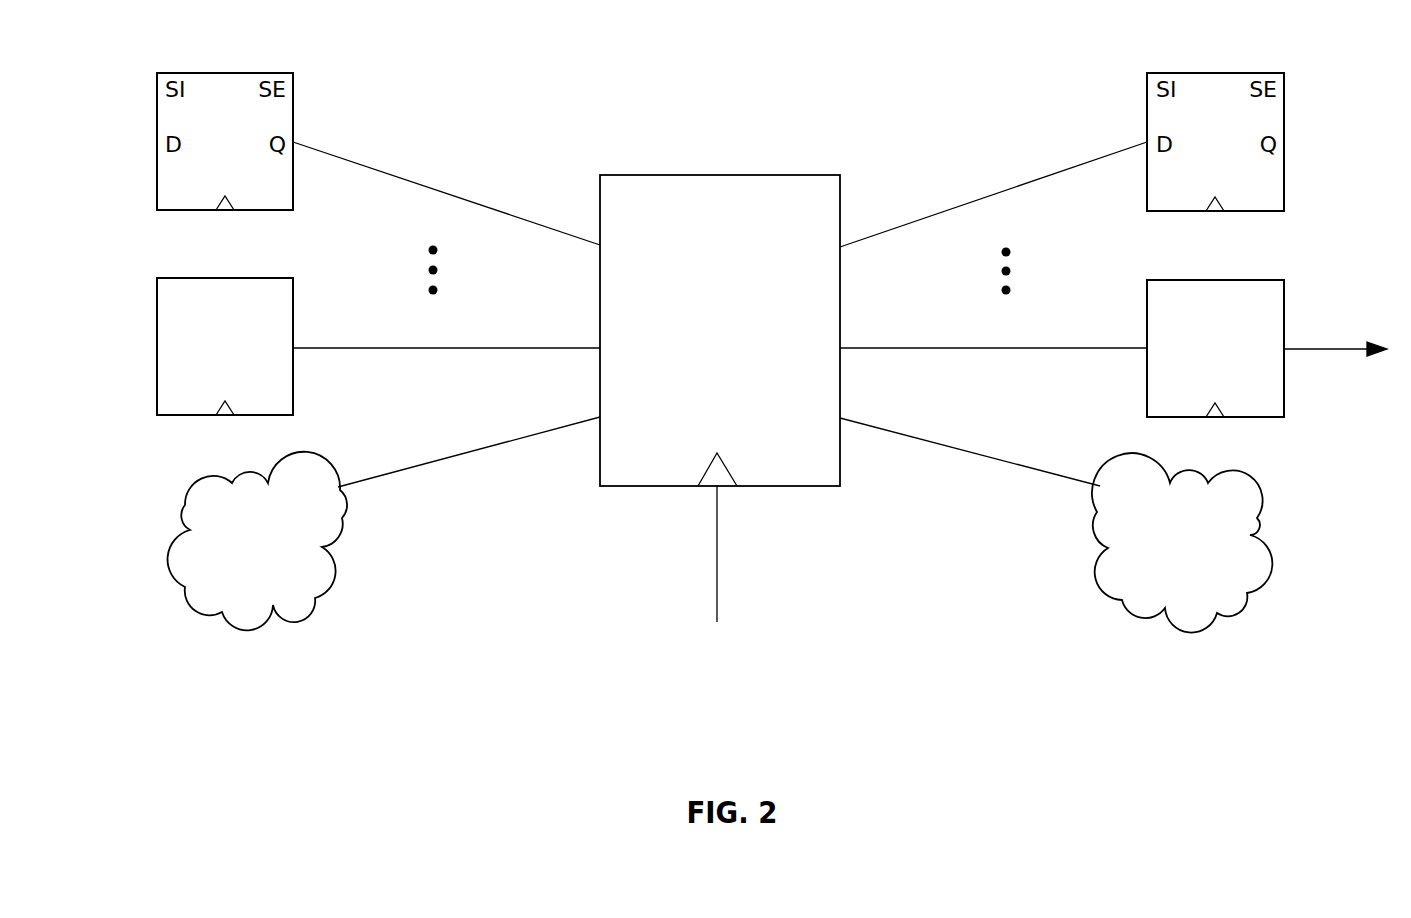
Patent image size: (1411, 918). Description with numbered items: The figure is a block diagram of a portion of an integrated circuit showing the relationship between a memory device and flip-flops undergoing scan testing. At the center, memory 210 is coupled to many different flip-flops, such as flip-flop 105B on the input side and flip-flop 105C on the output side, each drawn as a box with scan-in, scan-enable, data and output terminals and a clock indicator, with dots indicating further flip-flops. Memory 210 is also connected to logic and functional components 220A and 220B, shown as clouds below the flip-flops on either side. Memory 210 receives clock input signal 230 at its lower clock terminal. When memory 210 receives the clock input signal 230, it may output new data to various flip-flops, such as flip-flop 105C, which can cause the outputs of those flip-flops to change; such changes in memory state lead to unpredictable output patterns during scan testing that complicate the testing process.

The flip-flop 105B is at (293, 294).
The flip-flop 105C is at (1284, 296).
The memory 210 is at (755, 175).
The clock input signal 230 is at (718, 572).
The logic and functional components 220A is at (343, 515).
The logic and functional components 220B is at (1257, 517).